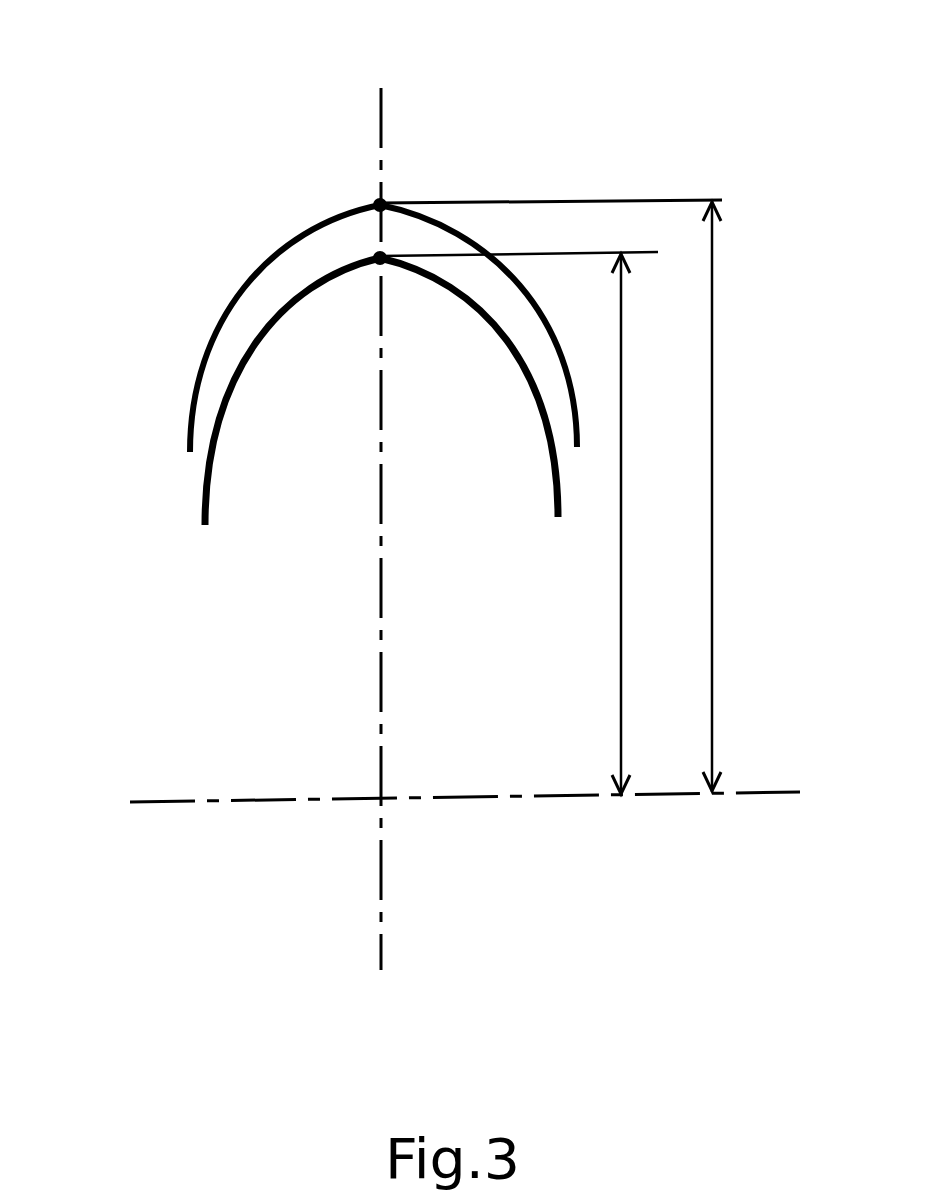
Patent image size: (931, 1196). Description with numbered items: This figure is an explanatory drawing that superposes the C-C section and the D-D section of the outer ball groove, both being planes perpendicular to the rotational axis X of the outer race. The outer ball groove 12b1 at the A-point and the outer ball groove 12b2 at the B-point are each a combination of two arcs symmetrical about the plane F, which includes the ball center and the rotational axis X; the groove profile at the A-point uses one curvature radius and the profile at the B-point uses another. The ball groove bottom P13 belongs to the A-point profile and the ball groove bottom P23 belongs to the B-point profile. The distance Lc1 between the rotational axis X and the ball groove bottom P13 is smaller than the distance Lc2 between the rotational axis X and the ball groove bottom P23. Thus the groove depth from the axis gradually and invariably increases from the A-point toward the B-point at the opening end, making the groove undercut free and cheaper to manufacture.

The plane F is at (381, 148).
The rotational axis X is at (772, 793).
The outer ball groove at the B-point 12b2 is at (305, 238).
The outer ball groove at the A-point 12b1 is at (252, 355).
The ball groove bottom P23 is at (378, 204).
The ball groove bottom P13 is at (378, 262).
The distance Lc1 is at (658, 524).
The distance Lc2 is at (751, 496).